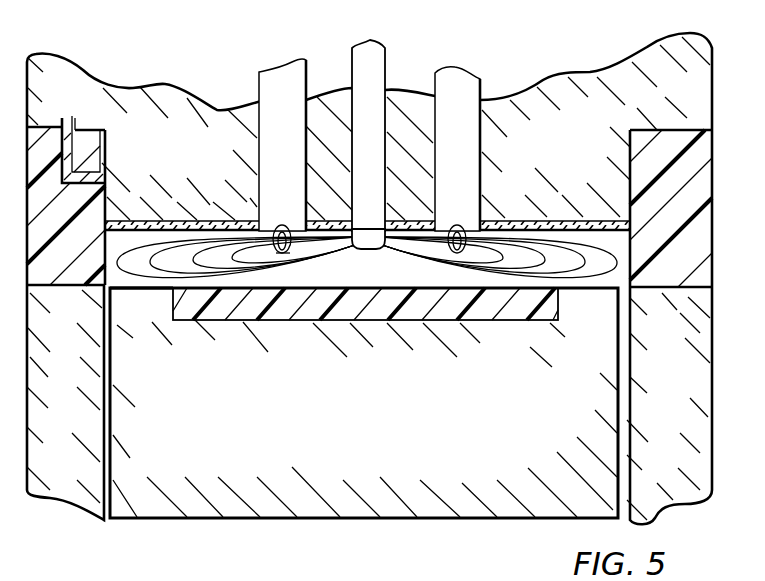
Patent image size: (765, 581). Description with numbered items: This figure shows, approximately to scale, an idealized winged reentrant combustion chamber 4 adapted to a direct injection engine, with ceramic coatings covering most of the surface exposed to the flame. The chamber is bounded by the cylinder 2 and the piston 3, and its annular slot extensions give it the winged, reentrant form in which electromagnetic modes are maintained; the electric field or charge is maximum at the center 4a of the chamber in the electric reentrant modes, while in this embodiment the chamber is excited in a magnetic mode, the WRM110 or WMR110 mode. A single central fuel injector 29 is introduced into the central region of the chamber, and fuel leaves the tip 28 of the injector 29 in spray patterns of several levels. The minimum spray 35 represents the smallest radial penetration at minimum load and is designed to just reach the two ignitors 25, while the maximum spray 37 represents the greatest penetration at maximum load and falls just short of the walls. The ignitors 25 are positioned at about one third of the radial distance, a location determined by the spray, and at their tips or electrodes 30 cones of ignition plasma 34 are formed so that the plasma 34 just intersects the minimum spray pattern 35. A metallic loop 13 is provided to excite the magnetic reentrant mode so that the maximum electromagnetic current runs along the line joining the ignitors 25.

The cylinder 2 is at (369, 278).
The piston 3 is at (364, 403).
The combustion chamber 4 is at (367, 237).
The center of the combustion chamber 4a is at (365, 290).
The metallic loop 13 is at (60, 118).
The ignitors 25 is at (369, 145).
The injector tip 28 is at (368, 234).
The central fuel injector 29 is at (368, 135).
The ignitor tips 30 is at (370, 227).
The ignition plasma 34 is at (272, 240).
The minimum fuel spray 35 is at (283, 254).
The maximum fuel spray 37 is at (141, 304).